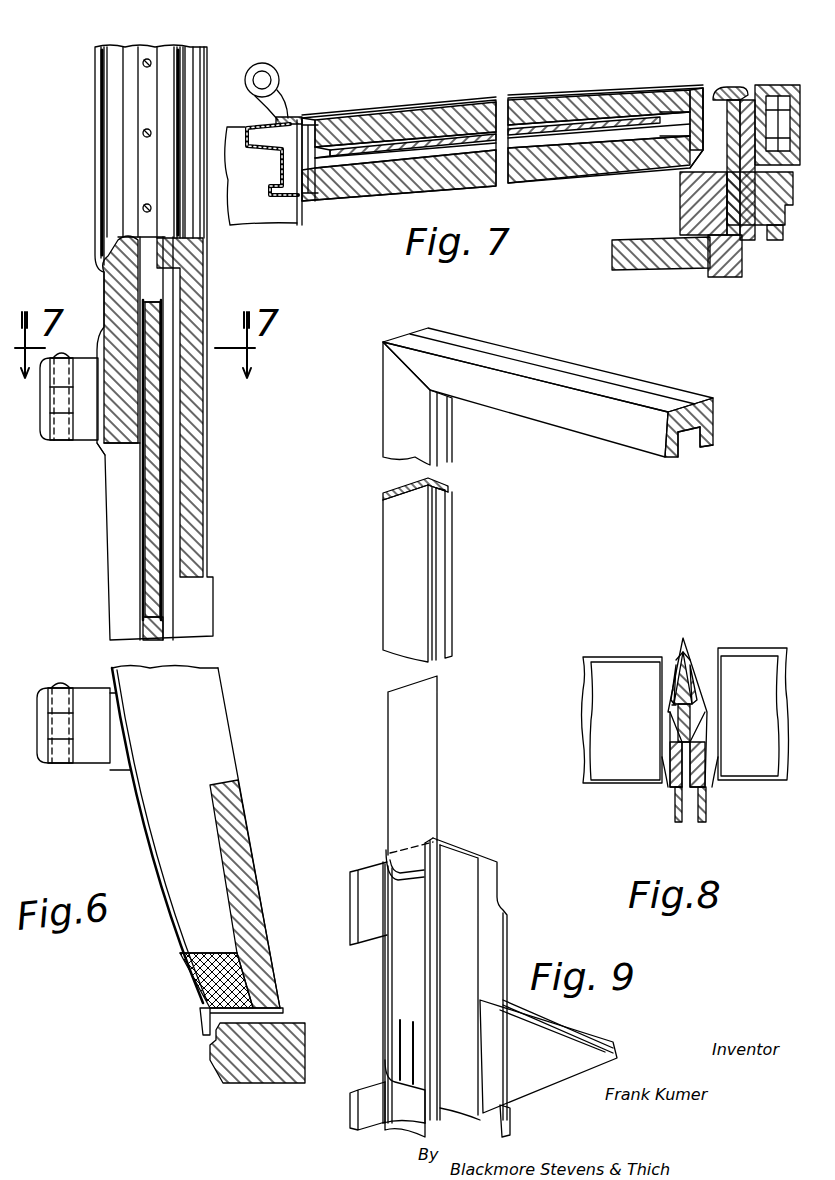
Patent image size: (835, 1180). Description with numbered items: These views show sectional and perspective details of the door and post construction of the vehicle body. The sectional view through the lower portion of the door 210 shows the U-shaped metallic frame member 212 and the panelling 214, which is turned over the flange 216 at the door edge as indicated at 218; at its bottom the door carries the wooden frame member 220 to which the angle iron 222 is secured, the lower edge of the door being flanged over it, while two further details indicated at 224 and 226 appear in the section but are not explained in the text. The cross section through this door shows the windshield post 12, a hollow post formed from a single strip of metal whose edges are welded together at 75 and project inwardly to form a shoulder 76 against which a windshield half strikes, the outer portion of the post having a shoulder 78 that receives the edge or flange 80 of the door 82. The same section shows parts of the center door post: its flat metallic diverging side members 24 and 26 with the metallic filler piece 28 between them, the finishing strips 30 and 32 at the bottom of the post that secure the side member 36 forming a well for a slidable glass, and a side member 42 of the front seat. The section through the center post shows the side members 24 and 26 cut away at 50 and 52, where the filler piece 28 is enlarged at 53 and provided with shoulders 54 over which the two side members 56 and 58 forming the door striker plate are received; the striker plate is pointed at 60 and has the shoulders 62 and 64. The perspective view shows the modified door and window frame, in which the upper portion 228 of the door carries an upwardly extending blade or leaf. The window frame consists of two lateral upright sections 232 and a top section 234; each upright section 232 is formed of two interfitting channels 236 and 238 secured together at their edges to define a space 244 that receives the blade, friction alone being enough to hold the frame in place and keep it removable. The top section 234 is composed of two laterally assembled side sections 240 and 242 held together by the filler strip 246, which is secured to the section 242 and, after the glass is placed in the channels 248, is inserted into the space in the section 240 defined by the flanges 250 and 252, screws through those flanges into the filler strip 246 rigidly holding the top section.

In FIG. 7, the windshield post 12 is at (250, 127).
In FIG. 6, the side member 24 is at (290, 1030).
In FIG. 7, the side member 24 is at (749, 230).
In FIG. 8, the side member 24 is at (705, 815).
In FIG. 7, the side member 26 is at (700, 178).
In FIG. 8, the side member 26 is at (676, 815).
In FIG. 7, the metallic filler piece 28 is at (770, 85).
In FIG. 7, the finishing strip 30 is at (778, 243).
In FIG. 7, the finishing strip 32 is at (690, 207).
In FIG. 7, the side member 36 is at (720, 277).
In FIG. 7, the side member of front seat 42 is at (620, 243).
In FIG. 8, the cutaway portion 50 is at (675, 783).
In FIG. 8, the cutaway portion 52 is at (703, 783).
In FIG. 8, the enlarged portion 53 is at (672, 668).
In FIG. 8, the shoulders 54 is at (690, 693).
In FIG. 8, the striker plate side member 56 is at (702, 680).
In FIG. 8, the striker plate side member 58 is at (680, 650).
In FIG. 8, the pointed portion 60 is at (690, 660).
In FIG. 8, the shoulder 62 is at (675, 712).
In FIG. 8, the shoulder 64 is at (670, 762).
In FIG. 7, the welded edges 75 is at (296, 195).
In FIG. 7, the shoulder 76 is at (272, 162).
In FIG. 7, the shoulder 78 is at (282, 120).
In FIG. 7, the door flange 80 is at (291, 122).
In FIG. 6, the door 82 is at (103, 463).
In FIG. 7, the door 82 is at (412, 106).
In FIG. 6, the door 210 is at (105, 507).
In FIG. 7, the door 210 is at (543, 98).
In FIG. 7, the U-shaped metallic frame member 212 is at (700, 92).
In FIG. 6, the panelling 214 is at (107, 580).
In FIG. 7, the flange 216 is at (736, 88).
In FIG. 7, the turned-over portion 218 is at (722, 90).
In FIG. 6, the wooden frame member 220 is at (221, 953).
In FIG. 6, the angle iron 222 is at (196, 1005).
In FIG. 6, the right filler 224 is at (208, 257).
In FIG. 6, the left cap 226 is at (103, 243).
In FIG. 9, the upper portion of door 228 is at (467, 888).
In FIG. 9, the upright section 232 is at (392, 560).
In FIG. 9, the top section 234 is at (568, 422).
In FIG. 9, the channel 236 is at (400, 497).
In FIG. 9, the channel 238 is at (442, 498).
In FIG. 9, the side section 240 is at (497, 405).
In FIG. 9, the side section 242 is at (590, 372).
In FIG. 9, the space 244 is at (395, 503).
In FIG. 9, the filler strip 246 is at (692, 448).
In FIG. 9, the glass channels 248 is at (703, 446).
In FIG. 9, the flange 250 is at (690, 408).
In FIG. 9, the flange 252 is at (676, 450).